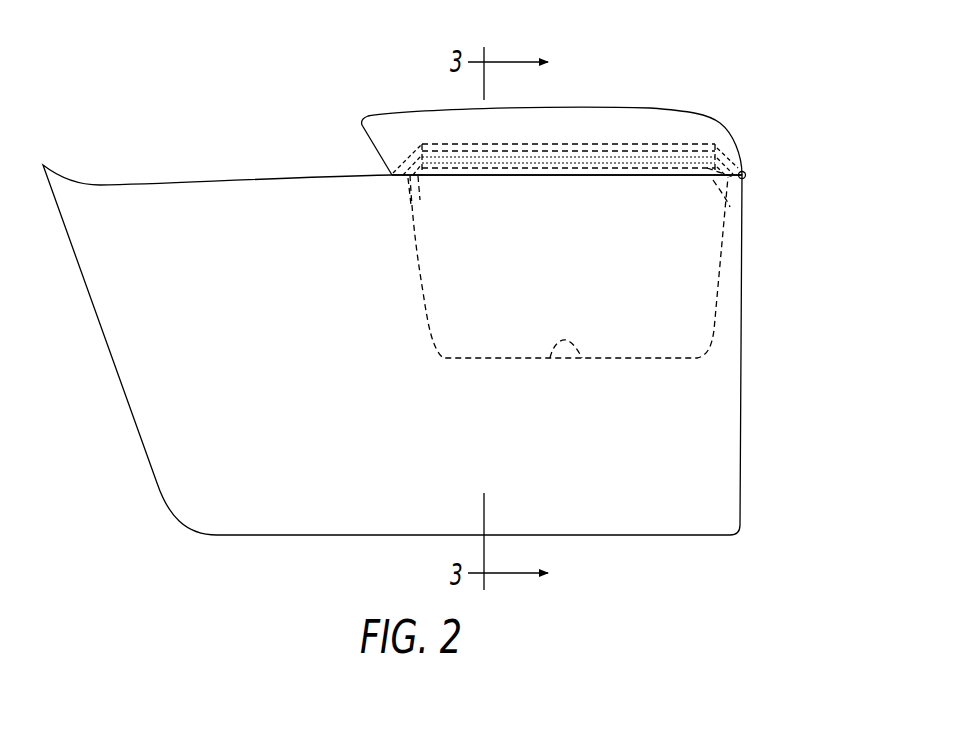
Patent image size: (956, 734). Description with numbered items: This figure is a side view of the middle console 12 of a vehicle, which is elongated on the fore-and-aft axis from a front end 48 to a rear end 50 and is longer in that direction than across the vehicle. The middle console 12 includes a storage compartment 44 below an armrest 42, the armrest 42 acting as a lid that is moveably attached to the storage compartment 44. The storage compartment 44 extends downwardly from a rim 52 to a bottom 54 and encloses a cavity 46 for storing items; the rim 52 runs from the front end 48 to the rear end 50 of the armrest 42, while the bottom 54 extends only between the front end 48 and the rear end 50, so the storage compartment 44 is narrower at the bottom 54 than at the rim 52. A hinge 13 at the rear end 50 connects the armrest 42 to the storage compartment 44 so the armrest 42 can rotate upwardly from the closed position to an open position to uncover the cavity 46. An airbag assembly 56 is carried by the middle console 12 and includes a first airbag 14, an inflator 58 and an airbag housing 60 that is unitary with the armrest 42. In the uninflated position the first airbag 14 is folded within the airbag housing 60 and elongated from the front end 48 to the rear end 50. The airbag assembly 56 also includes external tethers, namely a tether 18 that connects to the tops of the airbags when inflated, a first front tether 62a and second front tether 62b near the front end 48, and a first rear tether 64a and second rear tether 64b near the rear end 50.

The middle console 12 is at (740, 60).
The hinge 13 is at (747, 175).
The first airbag 14 is at (610, 150).
The tether 18 is at (580, 144).
The armrest 42 is at (652, 108).
The storage compartment 44 is at (418, 248).
The cavity 46 is at (512, 308).
The front end 48 is at (362, 122).
The rear end 50 is at (727, 125).
The rim 52 is at (477, 186).
The bottom 54 is at (551, 358).
The airbag assembly 56 is at (553, 128).
The inflator 58 is at (620, 176).
The airbag housing 60 is at (676, 134).
The first front tether 62a is at (410, 203).
The second front tether 62b is at (412, 170).
The first rear tether 64a is at (713, 181).
The second rear tether 64b is at (735, 148).